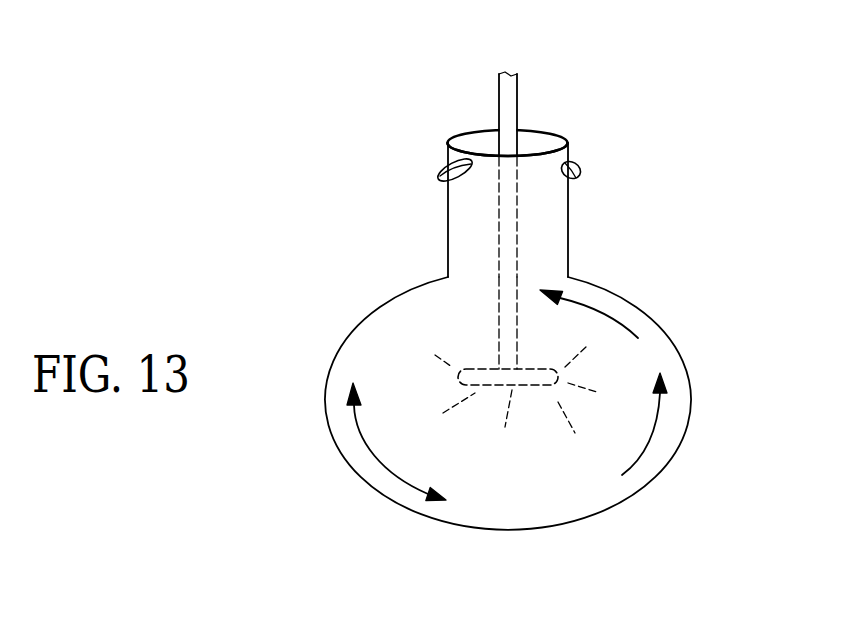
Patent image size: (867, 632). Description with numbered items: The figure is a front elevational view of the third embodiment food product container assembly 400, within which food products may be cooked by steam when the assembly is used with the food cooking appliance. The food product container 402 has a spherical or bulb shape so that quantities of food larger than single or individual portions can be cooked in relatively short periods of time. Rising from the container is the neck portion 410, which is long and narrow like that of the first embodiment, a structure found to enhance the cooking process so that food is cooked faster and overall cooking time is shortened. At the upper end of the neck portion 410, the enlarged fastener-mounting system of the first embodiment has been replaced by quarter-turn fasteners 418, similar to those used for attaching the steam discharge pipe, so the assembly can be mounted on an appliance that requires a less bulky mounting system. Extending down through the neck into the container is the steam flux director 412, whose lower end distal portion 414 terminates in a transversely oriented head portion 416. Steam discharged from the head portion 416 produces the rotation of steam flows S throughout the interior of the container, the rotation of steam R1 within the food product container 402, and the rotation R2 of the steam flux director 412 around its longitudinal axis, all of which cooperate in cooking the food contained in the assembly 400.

The third embodiment food product container assembly 400 is at (600, 110).
The third embodiment food product container 402 is at (677, 350).
The neck portion 410 is at (560, 213).
The steam flux director 412 is at (502, 233).
The lower end distal portion of steam flux director 414 is at (499, 308).
The transversely oriented head portion of steam flux director 416 is at (495, 386).
The quarter-turn fasteners 418 is at (445, 162).
The rotation of steam flows S is at (434, 357).
The rotation of steam within food product container R1 is at (610, 313).
The rotation of steam flux director around its longitudinal axis R2 is at (373, 458).